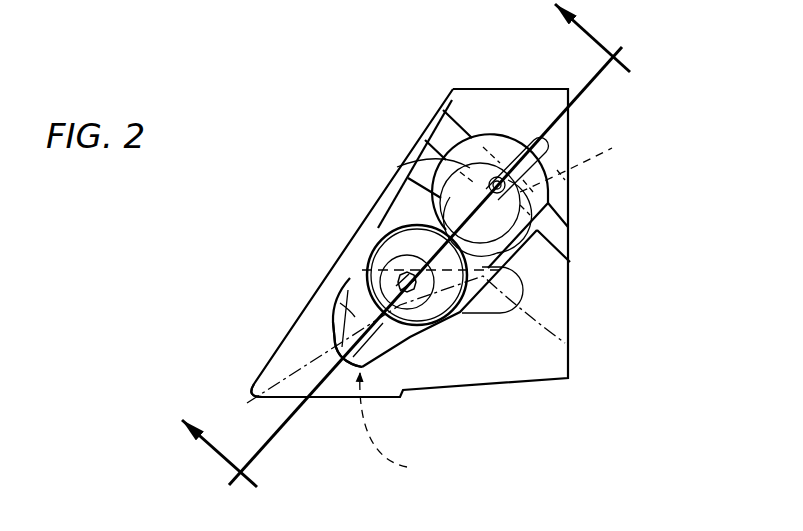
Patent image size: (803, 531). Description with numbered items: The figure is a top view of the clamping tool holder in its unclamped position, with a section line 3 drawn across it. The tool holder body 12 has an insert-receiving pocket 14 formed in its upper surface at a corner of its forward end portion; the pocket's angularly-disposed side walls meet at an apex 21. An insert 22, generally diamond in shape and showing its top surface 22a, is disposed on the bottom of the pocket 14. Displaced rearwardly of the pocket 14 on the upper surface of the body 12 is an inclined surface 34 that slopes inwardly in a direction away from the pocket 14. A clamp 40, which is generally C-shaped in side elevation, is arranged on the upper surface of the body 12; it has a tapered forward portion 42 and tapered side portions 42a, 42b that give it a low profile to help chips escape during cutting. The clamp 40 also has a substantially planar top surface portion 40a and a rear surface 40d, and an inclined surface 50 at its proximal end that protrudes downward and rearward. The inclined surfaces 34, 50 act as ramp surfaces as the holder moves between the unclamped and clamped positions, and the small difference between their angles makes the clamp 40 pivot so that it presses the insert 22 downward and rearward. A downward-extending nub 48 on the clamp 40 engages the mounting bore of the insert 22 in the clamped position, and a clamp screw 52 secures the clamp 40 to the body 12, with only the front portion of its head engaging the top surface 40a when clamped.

The section line 3- 3 is at (416, 257).
The tool holder body 12 is at (403, 163).
The insert-receiving pocket 14 is at (437, 330).
The apex 21 is at (565, 343).
The insert 22 is at (277, 342).
The top surface 22a is at (270, 378).
The inclined surface 34 is at (556, 247).
The clamp 40 is at (331, 305).
The top surface portion 40a is at (353, 297).
The rear surface 40d is at (497, 147).
The tapered forward portion 42 is at (333, 322).
The tapered side portion 42a is at (337, 340).
The tapered side portion 42b is at (410, 330).
The nub 48 is at (398, 426).
The inclined surface 50 is at (612, 148).
The clamp screw 52 is at (397, 228).